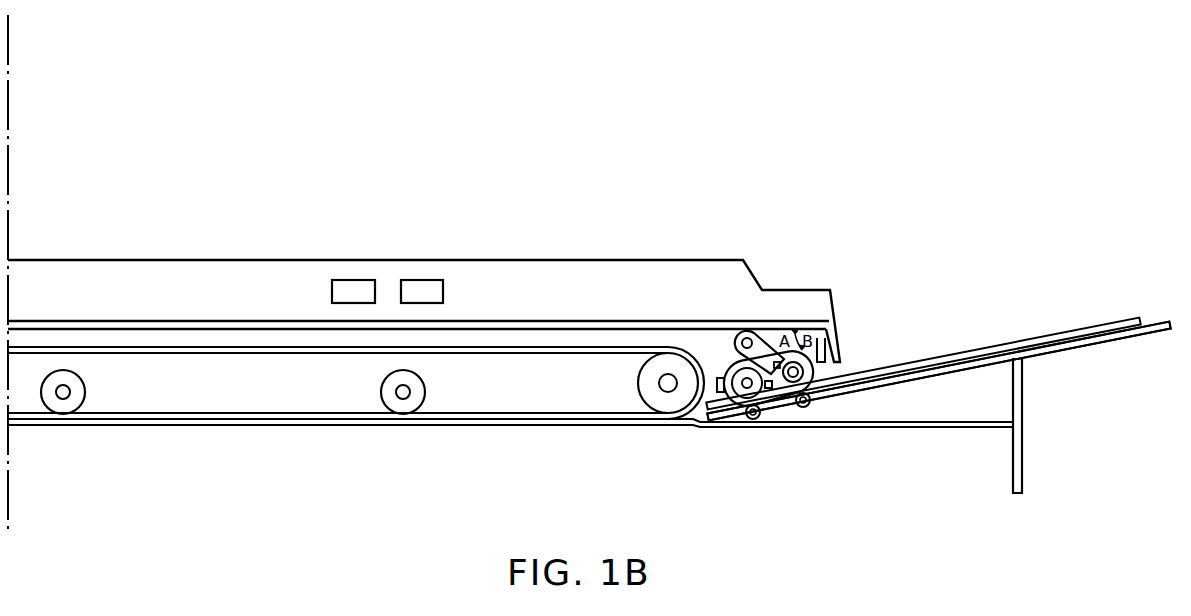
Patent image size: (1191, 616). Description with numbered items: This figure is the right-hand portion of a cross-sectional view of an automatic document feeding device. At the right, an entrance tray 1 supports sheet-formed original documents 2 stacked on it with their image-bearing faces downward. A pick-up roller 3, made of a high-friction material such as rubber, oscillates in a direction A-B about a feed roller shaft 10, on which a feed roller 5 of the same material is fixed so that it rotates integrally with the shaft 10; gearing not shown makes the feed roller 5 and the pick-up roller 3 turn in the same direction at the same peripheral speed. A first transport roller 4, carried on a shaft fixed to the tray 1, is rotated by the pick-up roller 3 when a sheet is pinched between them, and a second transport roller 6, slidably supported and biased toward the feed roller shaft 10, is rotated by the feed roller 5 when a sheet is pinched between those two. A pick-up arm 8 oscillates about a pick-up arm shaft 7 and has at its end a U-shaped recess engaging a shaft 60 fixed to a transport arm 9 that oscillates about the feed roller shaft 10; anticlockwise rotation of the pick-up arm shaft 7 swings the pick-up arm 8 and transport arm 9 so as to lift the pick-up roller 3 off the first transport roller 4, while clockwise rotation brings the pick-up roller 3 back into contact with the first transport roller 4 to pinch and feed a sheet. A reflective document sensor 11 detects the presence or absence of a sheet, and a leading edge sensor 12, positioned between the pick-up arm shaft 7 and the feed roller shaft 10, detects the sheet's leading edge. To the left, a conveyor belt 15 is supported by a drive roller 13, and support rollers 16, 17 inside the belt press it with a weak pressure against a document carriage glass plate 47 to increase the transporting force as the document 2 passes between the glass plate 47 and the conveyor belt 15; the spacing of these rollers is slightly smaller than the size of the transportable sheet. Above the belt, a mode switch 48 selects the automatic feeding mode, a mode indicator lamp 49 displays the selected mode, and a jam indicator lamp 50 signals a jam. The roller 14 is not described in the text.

The entrance tray 1 is at (1133, 338).
The original documents 2 is at (1110, 323).
The pick-up roller 3 is at (848, 389).
The first transport roller 4 is at (817, 403).
The feed roller 5 is at (737, 362).
The second transport roller 6 is at (756, 420).
The pick-up arm shaft 7 is at (746, 335).
The pick-up arm 8 is at (766, 344).
The transport arm 9 is at (789, 388).
The feed roller shaft 10 is at (744, 391).
The reflective document sensor 11 is at (772, 391).
The leading edge sensor 12 is at (718, 378).
The drive roller 13 is at (665, 410).
The drive roller 14 is at (658, 382).
The conveyor belt 15 is at (552, 346).
The support roller 16 is at (385, 387).
The support roller 17 is at (82, 387).
The document carriage glass plate 47 is at (527, 427).
The mode switch 48 is at (386, 267).
The mode indicator lamp 49 is at (332, 285).
The jam indicator lamp 50 is at (433, 291).
The shaft 60 is at (813, 368).